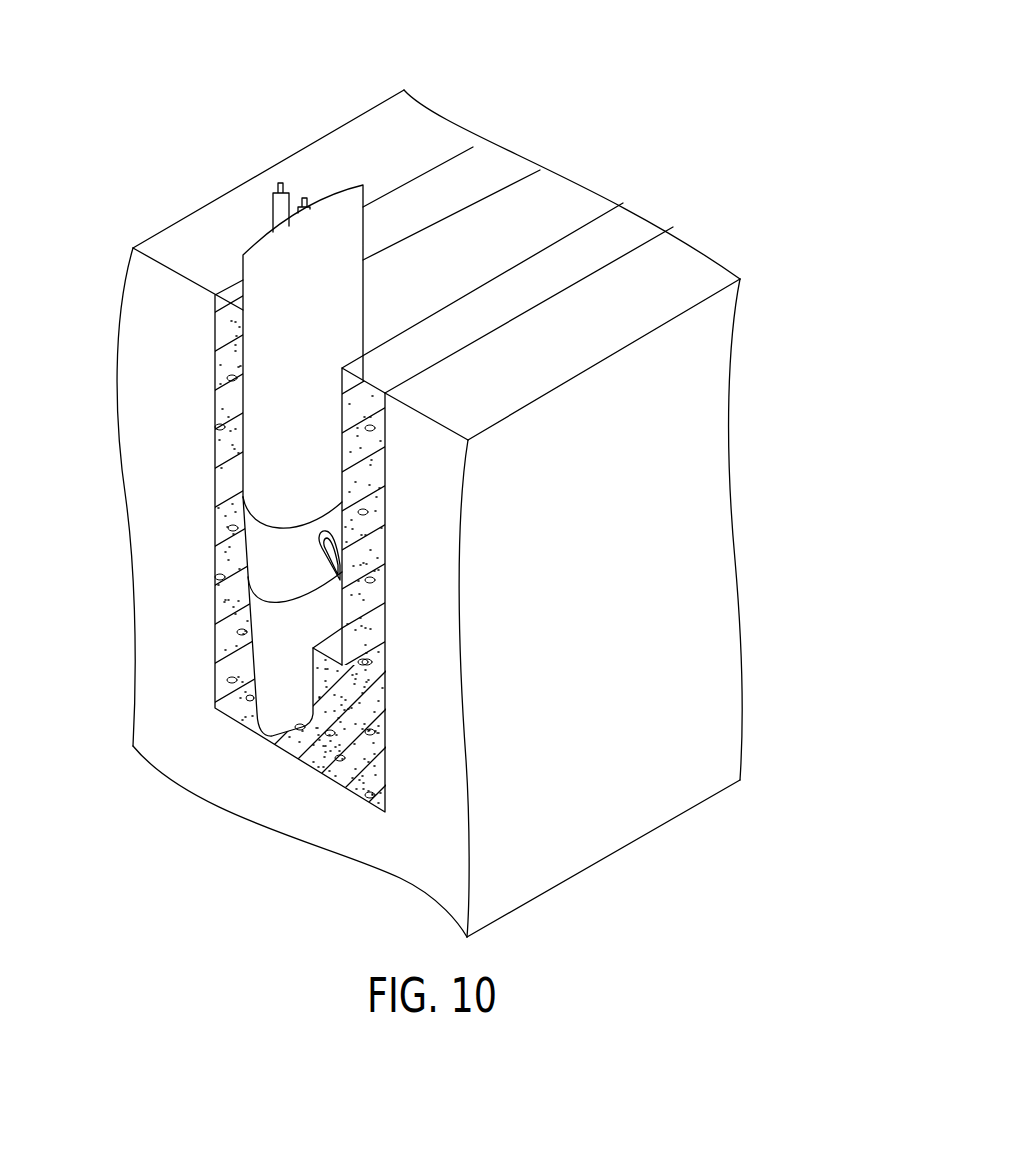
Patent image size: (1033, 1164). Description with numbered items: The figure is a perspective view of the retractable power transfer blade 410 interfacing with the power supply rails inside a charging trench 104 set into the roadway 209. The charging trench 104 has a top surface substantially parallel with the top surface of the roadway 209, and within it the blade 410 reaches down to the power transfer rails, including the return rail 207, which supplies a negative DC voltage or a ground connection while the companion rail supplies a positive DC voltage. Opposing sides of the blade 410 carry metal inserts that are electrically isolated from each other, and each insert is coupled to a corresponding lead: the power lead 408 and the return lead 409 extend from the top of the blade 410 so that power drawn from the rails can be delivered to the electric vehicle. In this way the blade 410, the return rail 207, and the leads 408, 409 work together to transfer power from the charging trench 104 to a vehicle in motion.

The charging trench 104 is at (317, 765).
The return rail 207 is at (320, 558).
The roadway 209 is at (735, 558).
The power lead 408 is at (273, 200).
The return lead 409 is at (307, 205).
The retractable power transfer blade 410 is at (363, 288).